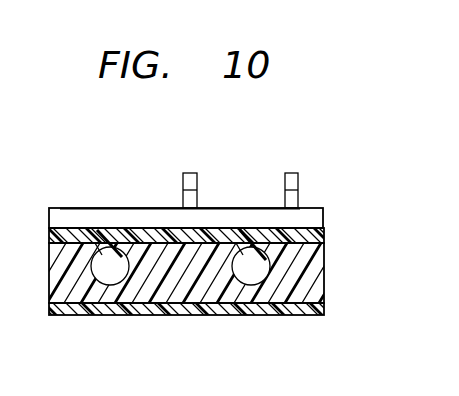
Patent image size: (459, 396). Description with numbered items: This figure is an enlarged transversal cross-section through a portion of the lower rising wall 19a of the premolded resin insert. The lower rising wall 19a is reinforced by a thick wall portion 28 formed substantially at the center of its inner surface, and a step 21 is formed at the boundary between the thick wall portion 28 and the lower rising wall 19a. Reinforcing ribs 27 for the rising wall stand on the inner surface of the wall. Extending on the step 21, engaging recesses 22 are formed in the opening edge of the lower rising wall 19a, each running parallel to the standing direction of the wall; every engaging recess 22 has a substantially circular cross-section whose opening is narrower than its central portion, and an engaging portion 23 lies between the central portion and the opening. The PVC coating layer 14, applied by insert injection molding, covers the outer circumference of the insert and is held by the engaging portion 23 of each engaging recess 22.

The step 21 is at (321, 216).
The thick wall portion 28 is at (112, 208).
The reinforcing ribs 27 is at (285, 200).
The coating layer 14 is at (319, 236).
The lower rising wall 19a is at (319, 275).
The engaging recess 22 is at (127, 284).
The engaging portion 23 is at (116, 272).